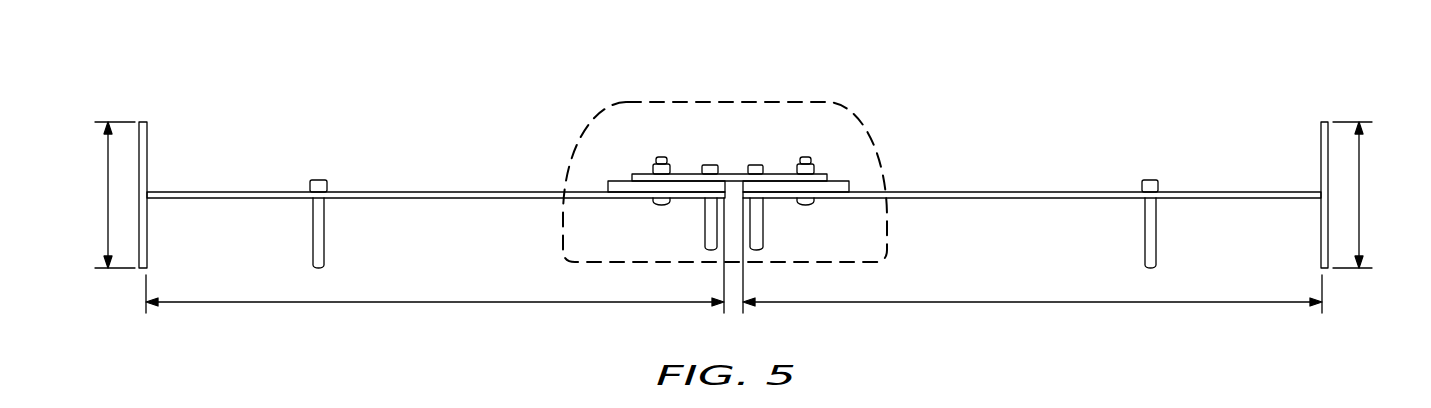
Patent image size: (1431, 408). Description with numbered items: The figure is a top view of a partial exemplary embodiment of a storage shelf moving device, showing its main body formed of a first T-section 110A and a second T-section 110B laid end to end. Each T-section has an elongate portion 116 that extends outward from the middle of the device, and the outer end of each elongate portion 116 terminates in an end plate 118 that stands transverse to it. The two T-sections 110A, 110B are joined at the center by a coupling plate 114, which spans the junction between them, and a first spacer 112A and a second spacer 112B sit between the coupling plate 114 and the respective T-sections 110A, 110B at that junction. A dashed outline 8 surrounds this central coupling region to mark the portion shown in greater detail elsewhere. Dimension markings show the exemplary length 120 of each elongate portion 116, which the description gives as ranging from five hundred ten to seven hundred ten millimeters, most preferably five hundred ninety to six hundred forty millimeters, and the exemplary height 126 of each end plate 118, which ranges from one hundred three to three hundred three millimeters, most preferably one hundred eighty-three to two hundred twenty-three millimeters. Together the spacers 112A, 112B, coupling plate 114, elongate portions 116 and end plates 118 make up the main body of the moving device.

The detail region of FIG. 8 is at (795, 102).
The first T-section 110A is at (255, 192).
The second T-section 110B is at (1235, 192).
The first spacer 112A is at (610, 181).
The second spacer 112B is at (843, 181).
The coupling plate 114 is at (741, 174).
The elongate portion 116 is at (734, 175).
The end plate 118 is at (143, 122).
The length 120 is at (413, 302).
The height 126 is at (107, 194).